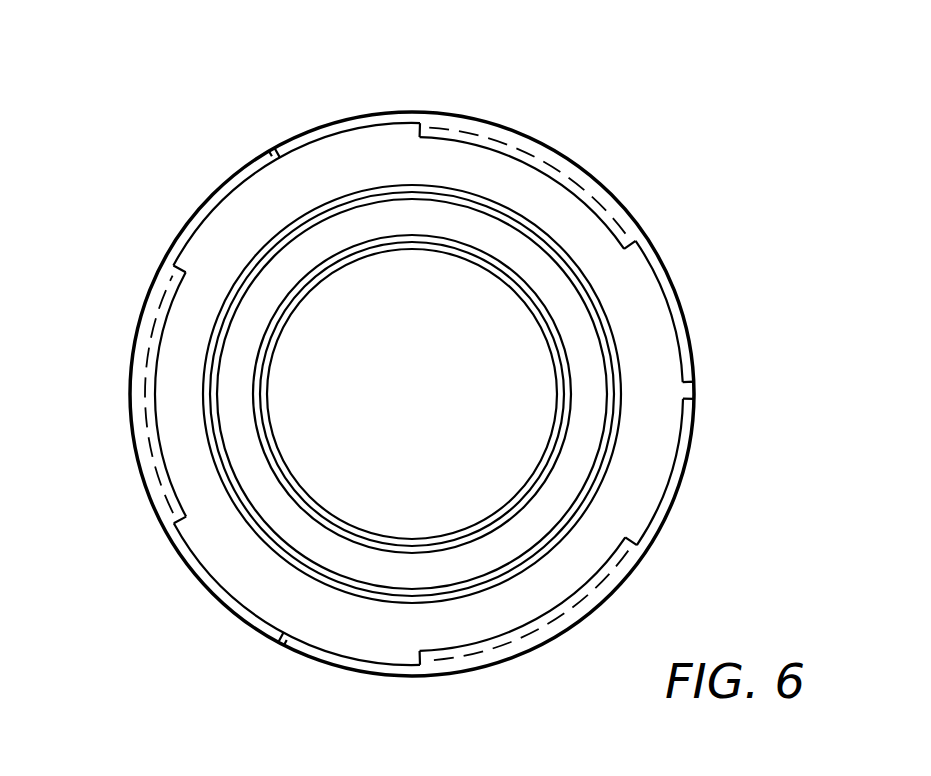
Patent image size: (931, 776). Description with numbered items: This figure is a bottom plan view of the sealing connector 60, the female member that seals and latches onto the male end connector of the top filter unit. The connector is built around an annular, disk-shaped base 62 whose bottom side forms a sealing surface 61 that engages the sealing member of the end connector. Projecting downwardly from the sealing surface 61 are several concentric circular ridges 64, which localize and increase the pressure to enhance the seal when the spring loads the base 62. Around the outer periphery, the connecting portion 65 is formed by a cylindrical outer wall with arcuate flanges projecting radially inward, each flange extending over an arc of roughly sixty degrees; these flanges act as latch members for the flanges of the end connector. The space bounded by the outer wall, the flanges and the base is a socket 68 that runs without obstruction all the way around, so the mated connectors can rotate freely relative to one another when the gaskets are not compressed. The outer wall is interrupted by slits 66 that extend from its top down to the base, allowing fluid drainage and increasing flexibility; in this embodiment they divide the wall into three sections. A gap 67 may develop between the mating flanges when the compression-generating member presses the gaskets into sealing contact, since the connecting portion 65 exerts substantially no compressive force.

The sealing connector 60 is at (637, 185).
The sealing surface 61 is at (532, 265).
The base 62 is at (384, 365).
The circular ridges 64 is at (473, 247).
The connecting portion 65 is at (190, 220).
The slits 66 is at (275, 156).
The gap 67 is at (163, 332).
The socket 68 is at (228, 571).